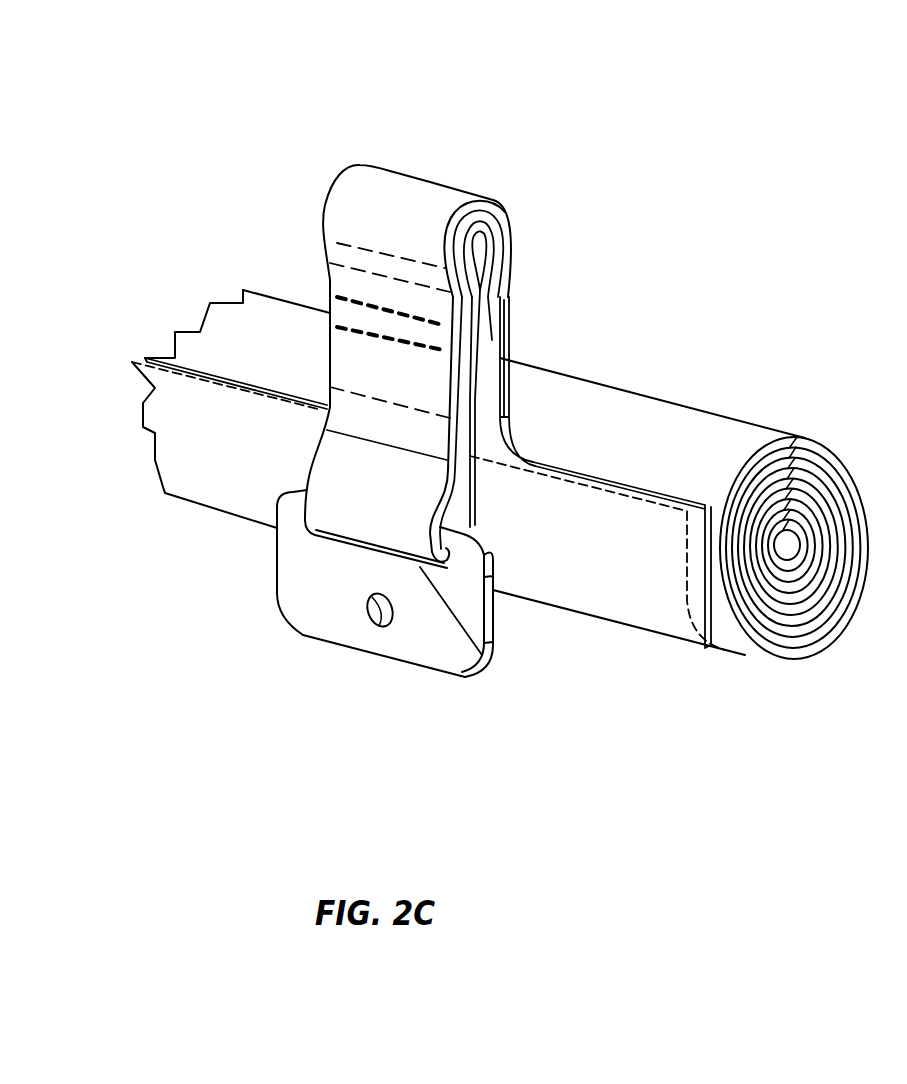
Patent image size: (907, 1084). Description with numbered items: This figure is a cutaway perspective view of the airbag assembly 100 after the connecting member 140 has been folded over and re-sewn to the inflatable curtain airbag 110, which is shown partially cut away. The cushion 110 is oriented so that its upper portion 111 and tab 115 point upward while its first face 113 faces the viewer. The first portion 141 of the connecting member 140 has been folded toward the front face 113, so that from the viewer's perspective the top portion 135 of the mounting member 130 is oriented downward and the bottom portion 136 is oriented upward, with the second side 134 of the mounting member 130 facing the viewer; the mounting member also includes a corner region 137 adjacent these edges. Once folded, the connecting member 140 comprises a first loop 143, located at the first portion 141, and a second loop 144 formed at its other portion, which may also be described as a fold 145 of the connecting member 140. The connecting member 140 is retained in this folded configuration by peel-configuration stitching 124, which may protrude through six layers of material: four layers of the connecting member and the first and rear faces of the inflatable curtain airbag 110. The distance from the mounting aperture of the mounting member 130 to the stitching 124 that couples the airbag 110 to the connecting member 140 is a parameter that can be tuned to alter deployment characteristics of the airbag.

The airbag assembly 100 is at (514, 123).
The inflatable curtain airbag 110 is at (621, 411).
The upper portion 111 is at (655, 535).
The first face 113 is at (611, 561).
The tab 115 is at (490, 395).
The peel-configuration stitching 124 is at (337, 297).
The mounting member 130 is at (309, 581).
The second side 134 is at (446, 632).
The top portion 135 is at (438, 652).
The bottom portion 136 is at (463, 593).
The plate corner 137 is at (487, 667).
The connecting member 140 is at (388, 198).
The first portion 141 is at (357, 483).
The first loop 143 is at (450, 512).
The second loop 144 is at (475, 243).
The fold 145 is at (444, 203).